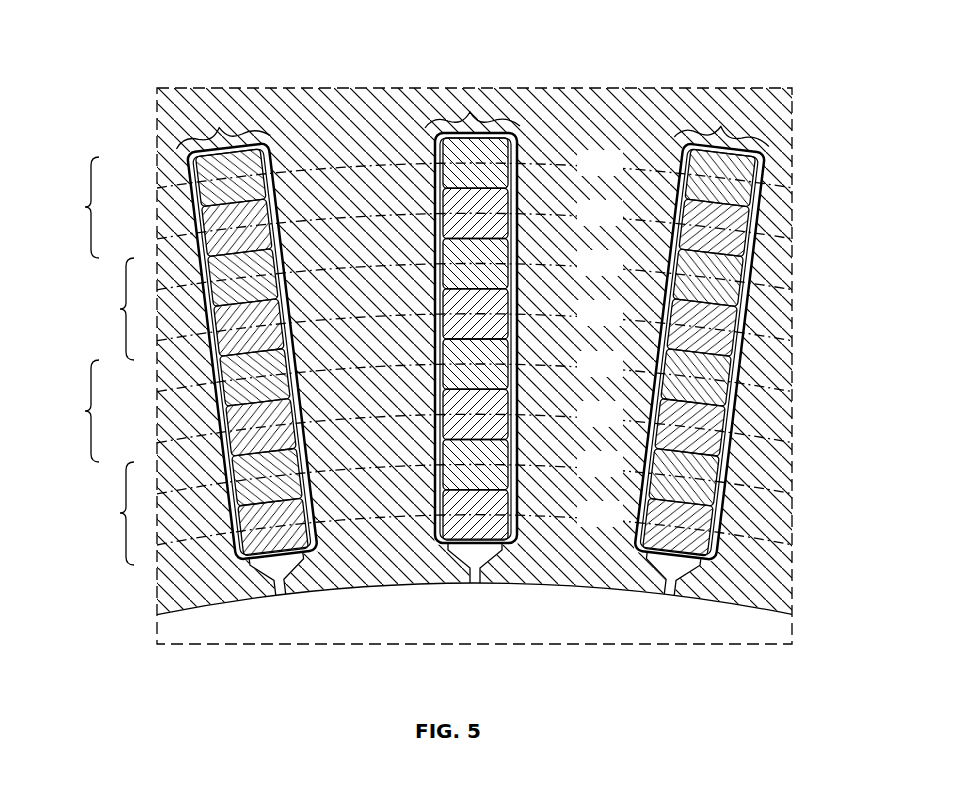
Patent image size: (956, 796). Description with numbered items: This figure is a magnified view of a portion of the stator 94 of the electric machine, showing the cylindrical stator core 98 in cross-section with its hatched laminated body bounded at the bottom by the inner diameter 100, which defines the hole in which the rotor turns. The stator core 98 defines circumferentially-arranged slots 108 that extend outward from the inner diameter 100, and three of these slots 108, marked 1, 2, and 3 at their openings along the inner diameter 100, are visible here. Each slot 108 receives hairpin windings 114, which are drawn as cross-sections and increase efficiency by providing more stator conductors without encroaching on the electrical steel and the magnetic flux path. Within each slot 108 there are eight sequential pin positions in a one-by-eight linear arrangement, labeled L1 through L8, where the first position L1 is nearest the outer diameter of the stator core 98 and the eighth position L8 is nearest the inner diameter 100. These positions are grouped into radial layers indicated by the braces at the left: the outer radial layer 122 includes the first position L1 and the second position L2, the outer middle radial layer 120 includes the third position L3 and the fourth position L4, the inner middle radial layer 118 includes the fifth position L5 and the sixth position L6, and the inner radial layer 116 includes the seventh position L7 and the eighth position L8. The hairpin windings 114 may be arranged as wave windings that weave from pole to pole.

The stator 94 is at (714, 50).
The stator core 98 is at (524, 98).
The inner diameter 100 is at (527, 586).
The slots 108 is at (264, 618).
The hairpin windings 114 is at (470, 112).
The inner radial layer 116 is at (109, 513).
The inner middle radial layer 118 is at (72, 411).
The outer middle radial layer 120 is at (109, 309).
The outer radial layer 122 is at (72, 207).
The first position L1 is at (474, 175).
The second position L2 is at (474, 226).
The third position L3 is at (474, 276).
The fourth position L4 is at (474, 327).
The fifth position L5 is at (474, 378).
The sixth position L6 is at (474, 428).
The seventh position L7 is at (474, 479).
The eighth position L8 is at (474, 530).
The slot 1 is at (672, 617).
The slot 2 is at (477, 605).
The slot 3 is at (283, 615).